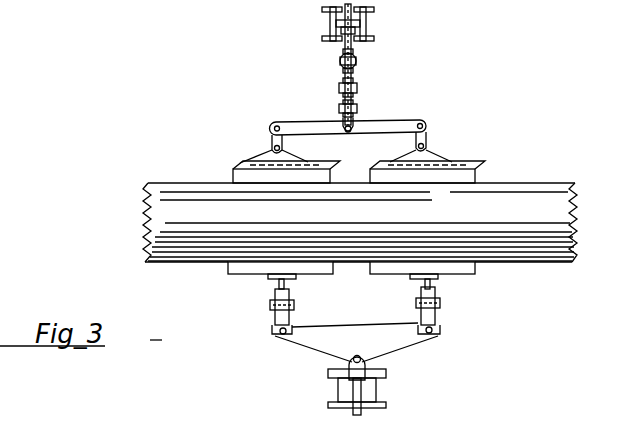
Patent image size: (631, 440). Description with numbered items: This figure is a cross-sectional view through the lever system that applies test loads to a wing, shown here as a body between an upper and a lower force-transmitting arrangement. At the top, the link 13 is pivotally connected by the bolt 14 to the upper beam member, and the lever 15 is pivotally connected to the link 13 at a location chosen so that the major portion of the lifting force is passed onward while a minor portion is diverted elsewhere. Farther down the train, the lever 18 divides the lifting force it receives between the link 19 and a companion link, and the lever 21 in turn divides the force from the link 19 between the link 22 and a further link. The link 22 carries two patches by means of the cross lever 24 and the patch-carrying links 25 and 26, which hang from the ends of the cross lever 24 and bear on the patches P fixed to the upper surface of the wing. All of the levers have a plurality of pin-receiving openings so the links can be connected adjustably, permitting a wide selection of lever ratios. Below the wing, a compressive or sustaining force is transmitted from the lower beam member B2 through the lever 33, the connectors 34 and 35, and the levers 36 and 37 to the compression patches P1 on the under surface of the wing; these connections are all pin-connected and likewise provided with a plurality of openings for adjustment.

The link 13 is at (352, 42).
The bolt 14 is at (366, 22).
The lever 15 is at (356, 62).
The lever 18 is at (357, 88).
The link 19 is at (357, 105).
The lever 21 is at (356, 120).
The link 22 is at (345, 128).
The cross lever 24 is at (424, 126).
The patch-carrying link 25 is at (271, 148).
The patch-carrying link 26 is at (427, 145).
The patch P is at (232, 176).
The compression patch P1 is at (488, 264).
The lever 33 is at (410, 336).
The connector 34 is at (274, 327).
The connector 35 is at (437, 324).
The lever 36 is at (290, 303).
The lever 37 is at (435, 301).
The lower beam member B2 is at (386, 392).